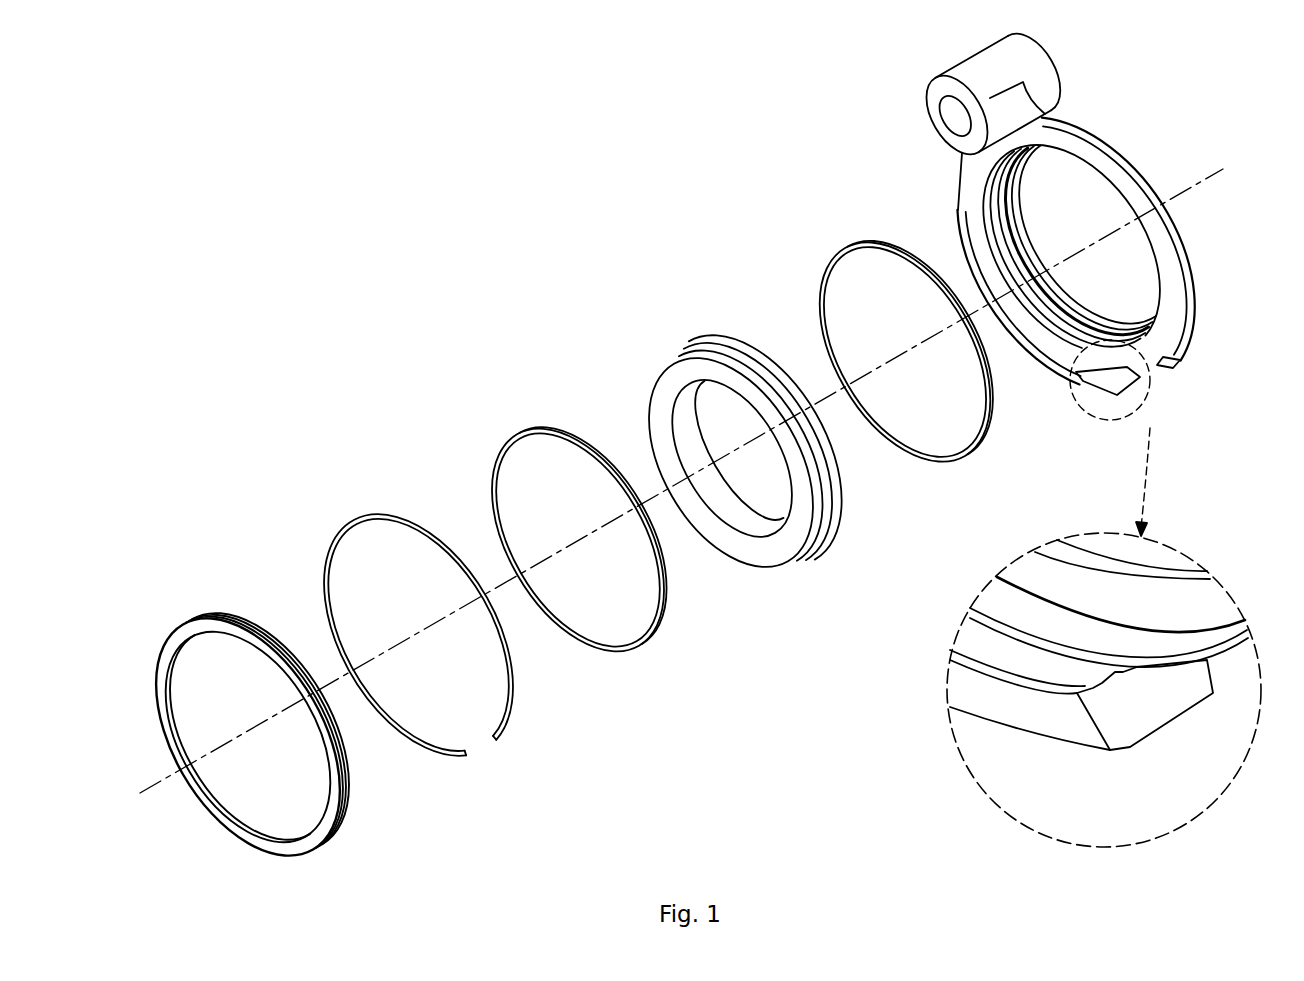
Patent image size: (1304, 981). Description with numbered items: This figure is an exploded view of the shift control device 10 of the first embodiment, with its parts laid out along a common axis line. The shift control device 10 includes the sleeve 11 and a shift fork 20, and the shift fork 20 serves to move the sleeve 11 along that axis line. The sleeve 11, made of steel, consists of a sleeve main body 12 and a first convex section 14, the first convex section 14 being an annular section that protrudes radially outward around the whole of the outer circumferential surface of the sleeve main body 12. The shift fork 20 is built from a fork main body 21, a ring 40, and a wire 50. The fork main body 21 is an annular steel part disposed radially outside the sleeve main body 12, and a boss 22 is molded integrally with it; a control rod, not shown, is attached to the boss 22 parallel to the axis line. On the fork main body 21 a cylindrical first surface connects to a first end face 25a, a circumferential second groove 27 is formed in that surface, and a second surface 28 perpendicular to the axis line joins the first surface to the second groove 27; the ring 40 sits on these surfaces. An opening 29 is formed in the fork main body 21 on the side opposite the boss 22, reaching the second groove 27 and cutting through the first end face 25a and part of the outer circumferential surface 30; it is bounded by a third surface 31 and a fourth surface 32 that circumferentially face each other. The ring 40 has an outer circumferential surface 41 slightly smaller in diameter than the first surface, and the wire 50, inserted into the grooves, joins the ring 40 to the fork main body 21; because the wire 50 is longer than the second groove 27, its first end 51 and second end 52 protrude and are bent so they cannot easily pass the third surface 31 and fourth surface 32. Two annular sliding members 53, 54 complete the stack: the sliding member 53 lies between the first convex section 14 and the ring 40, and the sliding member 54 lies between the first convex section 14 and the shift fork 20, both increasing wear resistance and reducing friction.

The shift control device 10 is at (512, 219).
The sleeve 11 is at (741, 431).
The sleeve main body 12 is at (762, 548).
The first convex section 14 is at (740, 343).
The shift fork 20 is at (1076, 432).
The fork main body 21 is at (1080, 246).
The boss 22 is at (1015, 53).
The first end face 25a is at (1047, 722).
The second groove 27 is at (1030, 667).
The second surface 28 is at (1140, 663).
The opening 29 is at (1187, 717).
The outer circumferential surface 30 is at (1178, 327).
The third surface 31 is at (1183, 687).
The fourth surface 32 is at (1172, 372).
The ring 40 is at (251, 709).
The outer circumferential surface 41 is at (230, 613).
The wire 50 is at (435, 647).
The first end 51 is at (498, 740).
The second end 52 is at (470, 757).
The sliding member 53 is at (535, 434).
The sliding member 54 is at (850, 246).